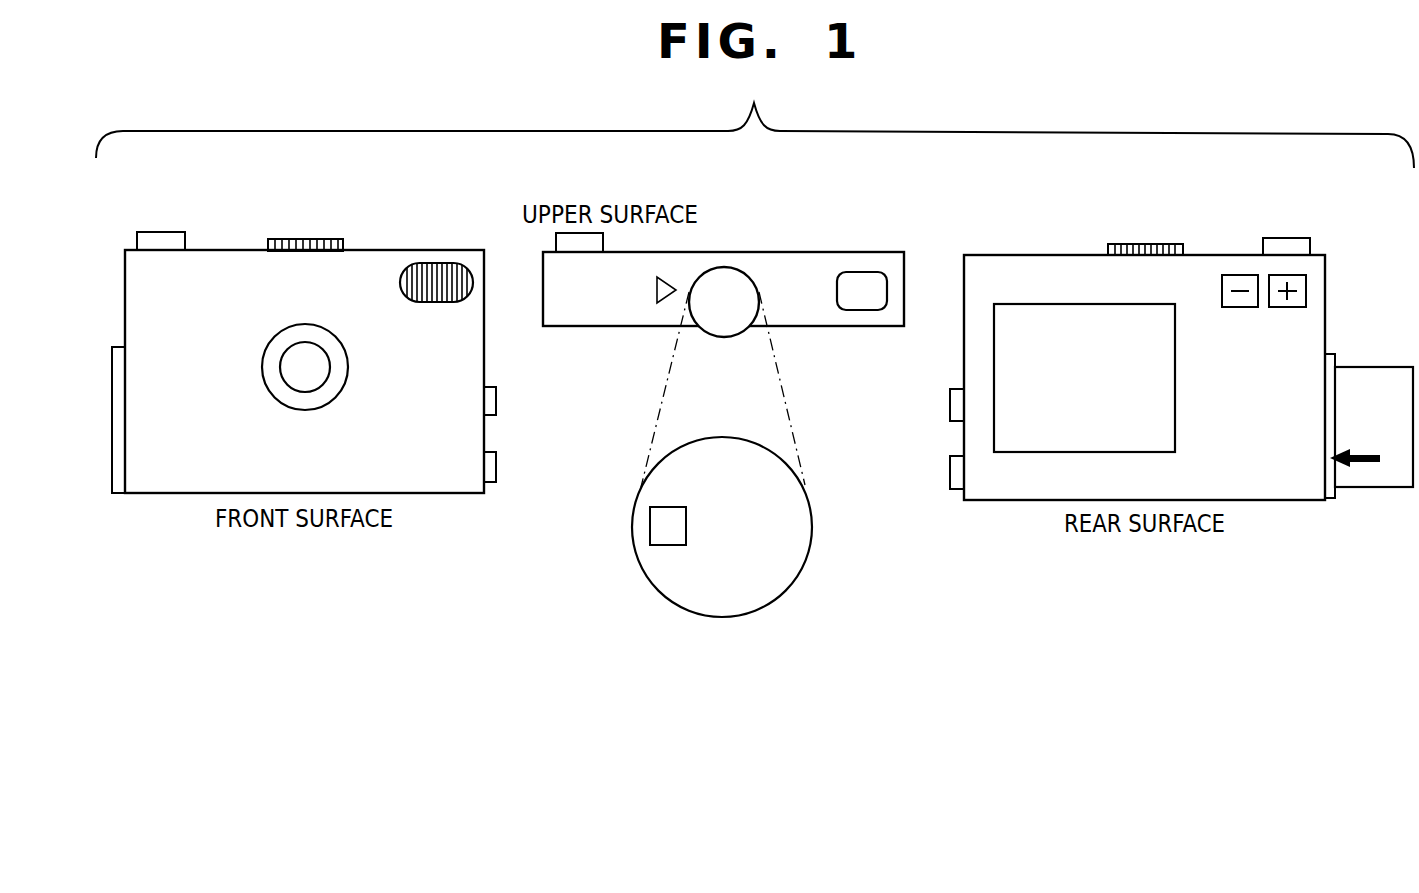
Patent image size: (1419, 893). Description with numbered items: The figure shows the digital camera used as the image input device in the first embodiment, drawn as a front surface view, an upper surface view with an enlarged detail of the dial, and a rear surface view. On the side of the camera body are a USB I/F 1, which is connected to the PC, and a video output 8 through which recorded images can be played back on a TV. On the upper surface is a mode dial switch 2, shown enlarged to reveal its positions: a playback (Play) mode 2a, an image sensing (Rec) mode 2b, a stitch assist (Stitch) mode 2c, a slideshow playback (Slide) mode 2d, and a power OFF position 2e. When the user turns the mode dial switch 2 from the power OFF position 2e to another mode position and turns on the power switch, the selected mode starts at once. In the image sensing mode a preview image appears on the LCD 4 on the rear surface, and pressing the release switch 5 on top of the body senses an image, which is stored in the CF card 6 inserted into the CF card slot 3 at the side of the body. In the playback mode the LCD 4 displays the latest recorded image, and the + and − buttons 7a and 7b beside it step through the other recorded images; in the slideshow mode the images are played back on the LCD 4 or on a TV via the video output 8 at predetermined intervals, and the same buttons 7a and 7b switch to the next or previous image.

The USB I/F 1 is at (487, 456).
The mode dial switch 2 is at (720, 278).
The playback (Play) mode 2a is at (773, 592).
The image sensing (Rec) mode 2b is at (795, 513).
The stitch assist (Stitch) mode 2c is at (755, 455).
The slideshow playback (Slide) mode 2d is at (685, 455).
The power OFF 2e is at (650, 530).
The CF card slot 3 is at (122, 349).
The LCD 4 is at (1047, 322).
The release switch 5 is at (157, 245).
The CF card 6 is at (1373, 477).
The + button 7a is at (1306, 275).
The − button 7b is at (1243, 273).
The video output 8 is at (487, 389).